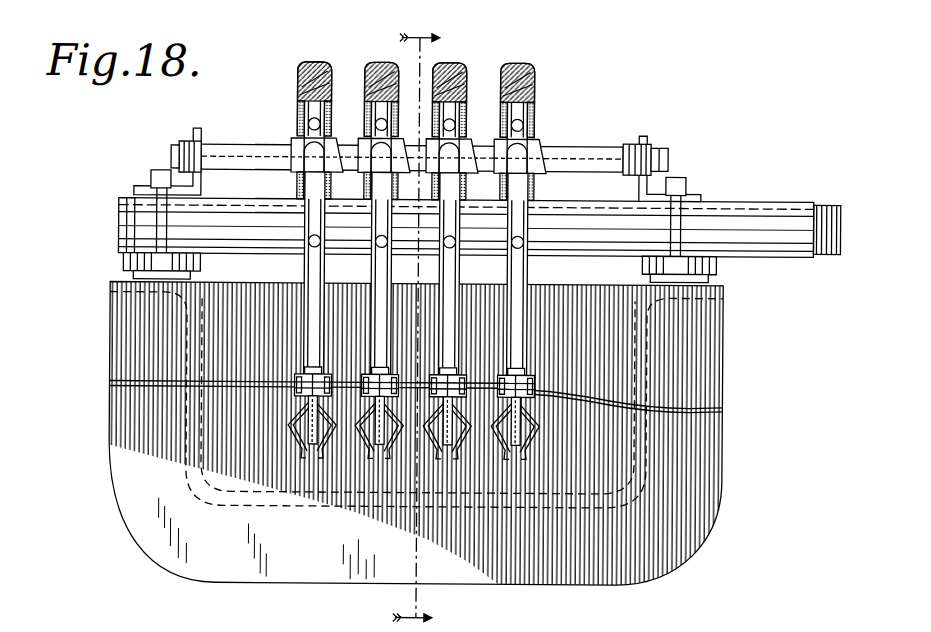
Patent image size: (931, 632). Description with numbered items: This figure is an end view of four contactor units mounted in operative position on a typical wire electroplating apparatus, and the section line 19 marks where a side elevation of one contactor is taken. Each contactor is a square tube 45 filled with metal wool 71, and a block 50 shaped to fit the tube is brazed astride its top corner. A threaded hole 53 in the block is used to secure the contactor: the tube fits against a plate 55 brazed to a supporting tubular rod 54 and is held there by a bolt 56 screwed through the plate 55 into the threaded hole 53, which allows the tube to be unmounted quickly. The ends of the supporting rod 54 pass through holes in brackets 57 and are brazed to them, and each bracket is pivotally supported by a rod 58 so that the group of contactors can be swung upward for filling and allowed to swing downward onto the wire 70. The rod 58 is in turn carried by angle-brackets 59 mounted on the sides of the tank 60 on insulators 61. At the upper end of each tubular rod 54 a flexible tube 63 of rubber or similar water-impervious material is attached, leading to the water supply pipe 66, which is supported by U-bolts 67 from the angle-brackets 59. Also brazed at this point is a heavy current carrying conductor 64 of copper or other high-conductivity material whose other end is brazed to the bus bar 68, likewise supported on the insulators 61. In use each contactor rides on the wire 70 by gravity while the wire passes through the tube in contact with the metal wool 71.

The section line 19— 19 is at (438, 330).
The tube 45 is at (537, 446).
The block 50 is at (300, 394).
The threaded hole 53 is at (540, 402).
The supporting tubular rod 54 is at (382, 315).
The plate 55 is at (367, 378).
The bolt 56 is at (306, 371).
The brackets 57 is at (292, 142).
The rod 58 is at (668, 166).
The angle-brackets 59 is at (212, 118).
The tank 60 is at (112, 455).
The insulators 61 is at (124, 264).
The flexible tube 63 is at (331, 108).
The current carrying conductor 64 is at (297, 118).
The water supply pipe 66 is at (783, 203).
The U-bolts 67 is at (682, 190).
The bus bar 68 is at (128, 202).
The wire 70 is at (385, 460).
The metal wool 71 is at (294, 430).